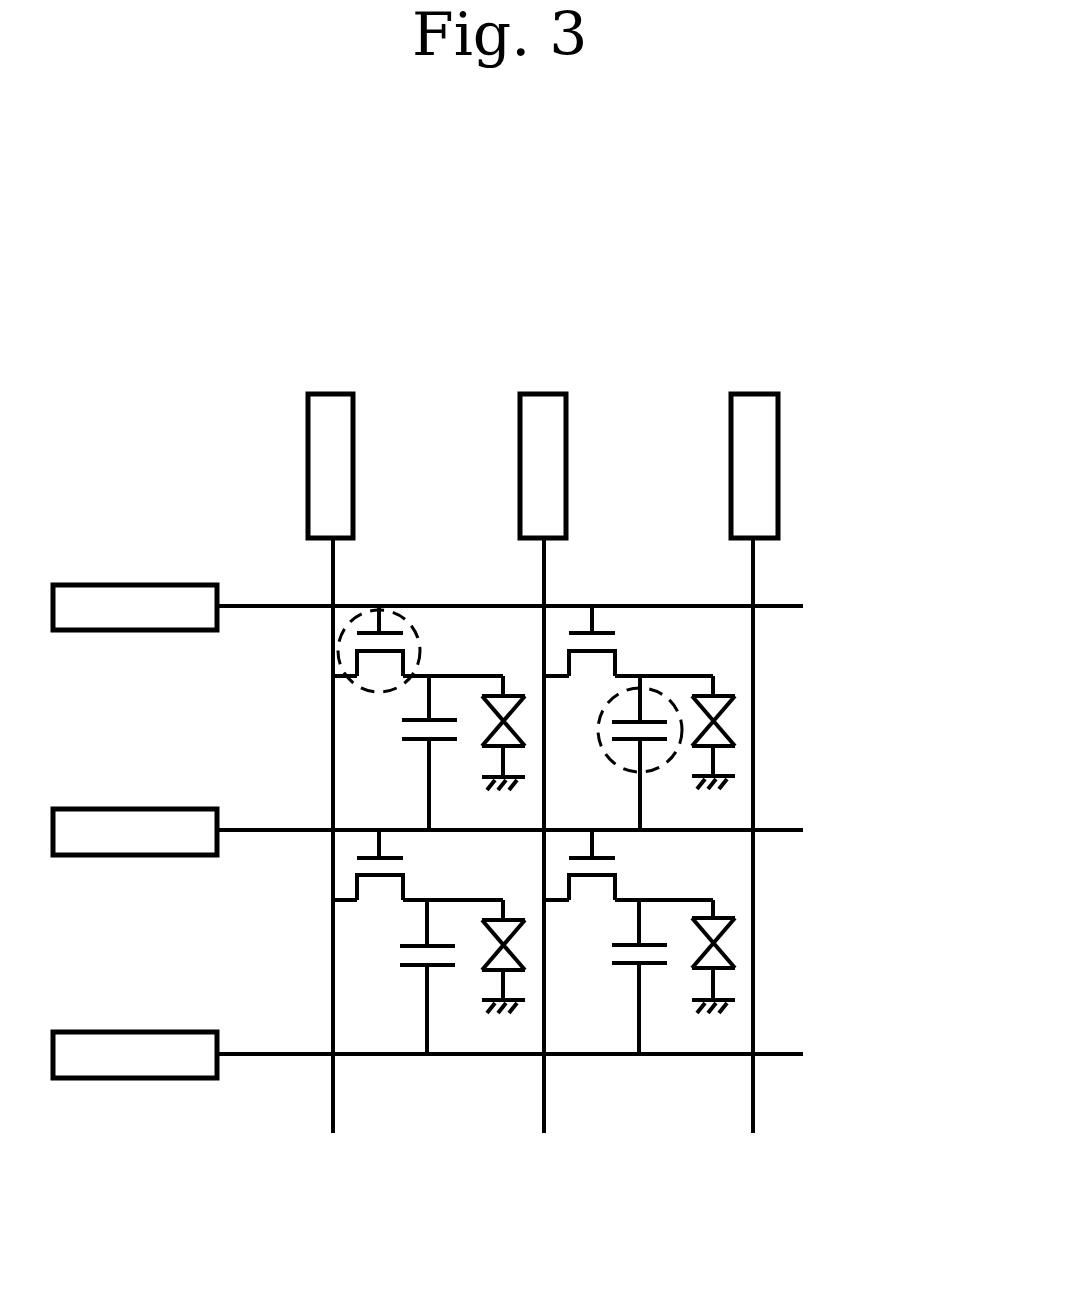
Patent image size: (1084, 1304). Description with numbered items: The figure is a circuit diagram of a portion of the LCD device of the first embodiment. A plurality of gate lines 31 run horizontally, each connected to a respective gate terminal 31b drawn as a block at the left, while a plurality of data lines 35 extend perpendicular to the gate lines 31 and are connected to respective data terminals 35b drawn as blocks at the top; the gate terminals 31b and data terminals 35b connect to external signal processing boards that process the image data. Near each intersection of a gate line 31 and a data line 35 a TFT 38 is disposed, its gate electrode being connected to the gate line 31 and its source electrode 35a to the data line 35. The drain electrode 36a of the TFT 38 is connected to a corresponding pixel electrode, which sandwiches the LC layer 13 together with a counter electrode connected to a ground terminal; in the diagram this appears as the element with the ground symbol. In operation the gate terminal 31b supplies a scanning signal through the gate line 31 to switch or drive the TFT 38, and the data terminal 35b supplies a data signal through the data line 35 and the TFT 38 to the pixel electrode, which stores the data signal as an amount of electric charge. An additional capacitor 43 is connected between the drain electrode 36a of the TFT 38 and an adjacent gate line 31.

The LC layer 13 is at (727, 725).
The gate line 31 is at (777, 830).
The gate terminal 31b is at (135, 1078).
The data line 35 is at (333, 1105).
The source electrode 35a is at (550, 677).
The data terminal 35b is at (778, 460).
The drain electrode 36a is at (693, 672).
The TFT 38 is at (418, 636).
The additional capacitor 43 is at (668, 690).